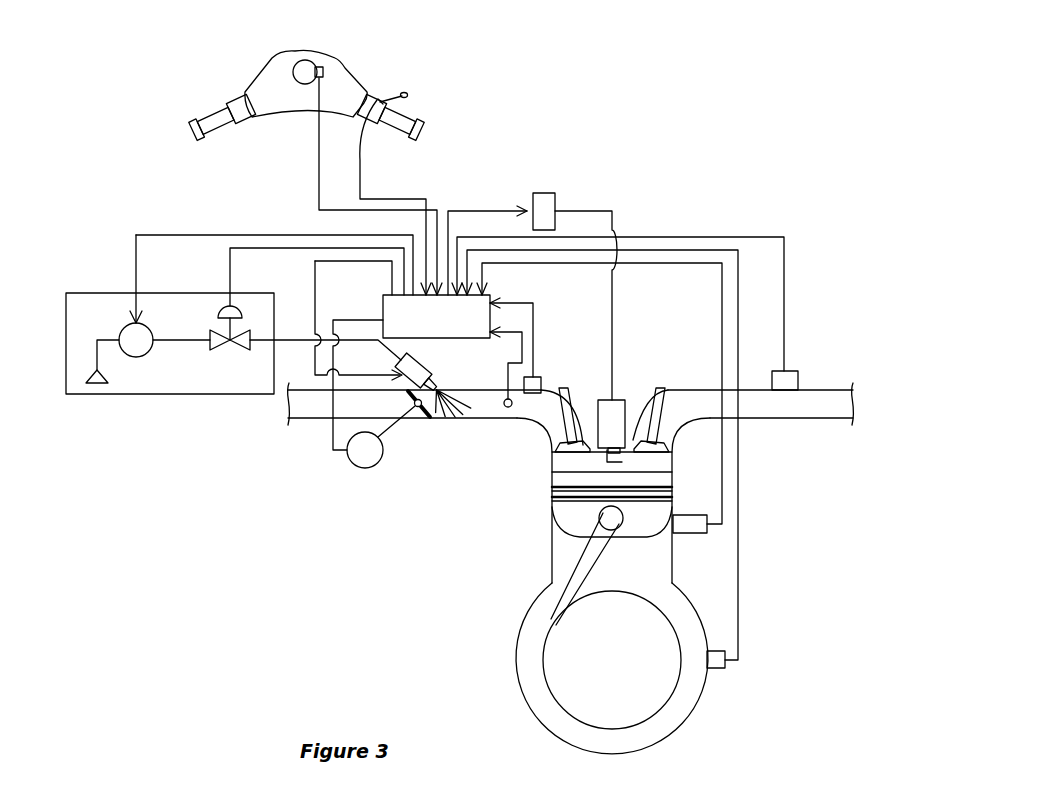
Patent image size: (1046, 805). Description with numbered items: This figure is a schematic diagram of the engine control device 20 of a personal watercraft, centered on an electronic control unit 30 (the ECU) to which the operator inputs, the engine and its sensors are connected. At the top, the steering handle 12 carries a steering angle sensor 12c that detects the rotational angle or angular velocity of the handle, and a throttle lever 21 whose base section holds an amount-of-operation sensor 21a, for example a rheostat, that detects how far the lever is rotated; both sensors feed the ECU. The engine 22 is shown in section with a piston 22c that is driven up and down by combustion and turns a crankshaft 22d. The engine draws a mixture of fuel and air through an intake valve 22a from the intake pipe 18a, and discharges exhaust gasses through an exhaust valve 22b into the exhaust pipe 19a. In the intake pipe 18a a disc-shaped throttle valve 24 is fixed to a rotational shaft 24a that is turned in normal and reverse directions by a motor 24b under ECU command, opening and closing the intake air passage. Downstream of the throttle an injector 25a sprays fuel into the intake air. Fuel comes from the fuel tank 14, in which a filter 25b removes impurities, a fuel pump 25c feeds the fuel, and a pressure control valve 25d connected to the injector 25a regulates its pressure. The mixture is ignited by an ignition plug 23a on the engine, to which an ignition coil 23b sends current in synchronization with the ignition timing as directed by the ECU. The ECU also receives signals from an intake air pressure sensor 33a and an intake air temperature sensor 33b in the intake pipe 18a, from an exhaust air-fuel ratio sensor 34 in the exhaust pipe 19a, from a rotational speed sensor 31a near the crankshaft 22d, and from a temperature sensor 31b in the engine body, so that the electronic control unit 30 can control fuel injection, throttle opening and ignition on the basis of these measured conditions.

The steering handle 12 is at (256, 70).
The steering angle sensor 12c is at (319, 66).
The fuel tank 14 is at (91, 293).
The intake pipe 18a is at (462, 420).
The exhaust pipe 19a is at (820, 420).
The engine control device 20 is at (530, 127).
The throttle lever 21 is at (408, 97).
The amount-of-operation sensor 21a is at (381, 99).
The engine 22 is at (497, 493).
The intake valve 22a is at (562, 396).
The exhaust valve 22b is at (661, 396).
The piston 22c is at (588, 517).
The crankshaft 22d is at (646, 724).
The ignition plug 23a is at (614, 398).
The ignition coil 23b is at (546, 193).
The throttle valve 24 is at (426, 412).
The rotational shaft 24a is at (416, 408).
The motor 24b is at (365, 468).
The injector 25a is at (428, 366).
The filter 25b is at (95, 386).
The fuel pump 25c is at (136, 358).
The pressure control valve 25d is at (232, 352).
The electronic control unit 30 is at (492, 300).
The rotational speed sensor 31a is at (717, 670).
The temperature sensor 31b is at (693, 535).
The intake air pressure sensor 33a is at (508, 407).
The intake air temperature sensor 33b is at (543, 378).
The exhaust air-fuel ratio sensor 34 is at (800, 380).